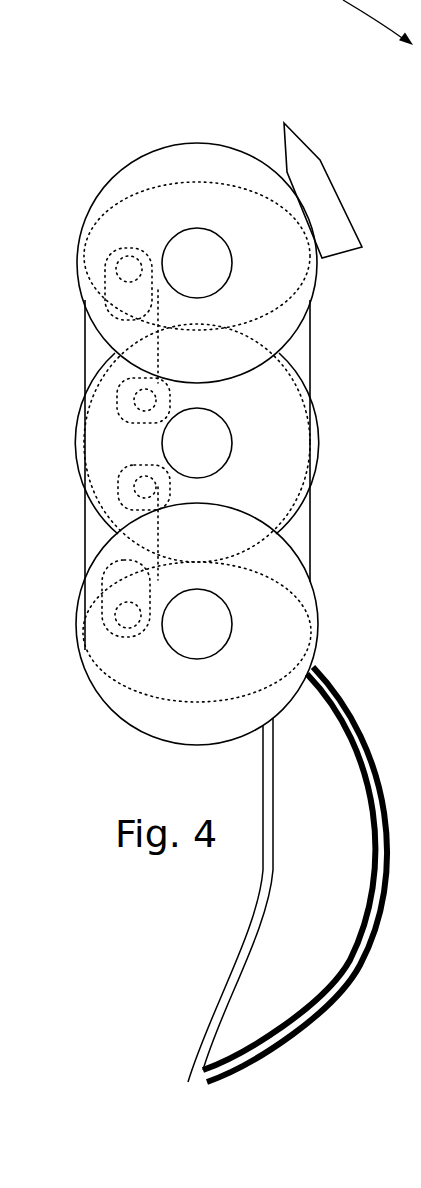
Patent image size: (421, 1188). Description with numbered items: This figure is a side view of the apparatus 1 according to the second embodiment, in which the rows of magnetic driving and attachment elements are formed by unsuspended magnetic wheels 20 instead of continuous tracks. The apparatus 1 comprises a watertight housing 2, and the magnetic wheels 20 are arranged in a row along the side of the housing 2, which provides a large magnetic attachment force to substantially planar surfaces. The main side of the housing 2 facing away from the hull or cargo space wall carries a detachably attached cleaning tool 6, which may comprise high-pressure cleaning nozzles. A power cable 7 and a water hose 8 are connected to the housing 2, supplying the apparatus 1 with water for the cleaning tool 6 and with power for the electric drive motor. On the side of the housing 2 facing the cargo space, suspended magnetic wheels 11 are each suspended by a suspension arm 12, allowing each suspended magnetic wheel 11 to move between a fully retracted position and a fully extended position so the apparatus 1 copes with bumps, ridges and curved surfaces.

The apparatus 1 is at (160, 103).
The watertight housing 2 is at (300, 532).
The cleaning tool 6 is at (323, 167).
The power cable 7 is at (238, 960).
The water hose 8 is at (345, 970).
The suspended magnetic wheel 11 is at (110, 238).
The suspension arm 12 is at (112, 355).
The unsuspended magnetic wheel 20 is at (285, 280).